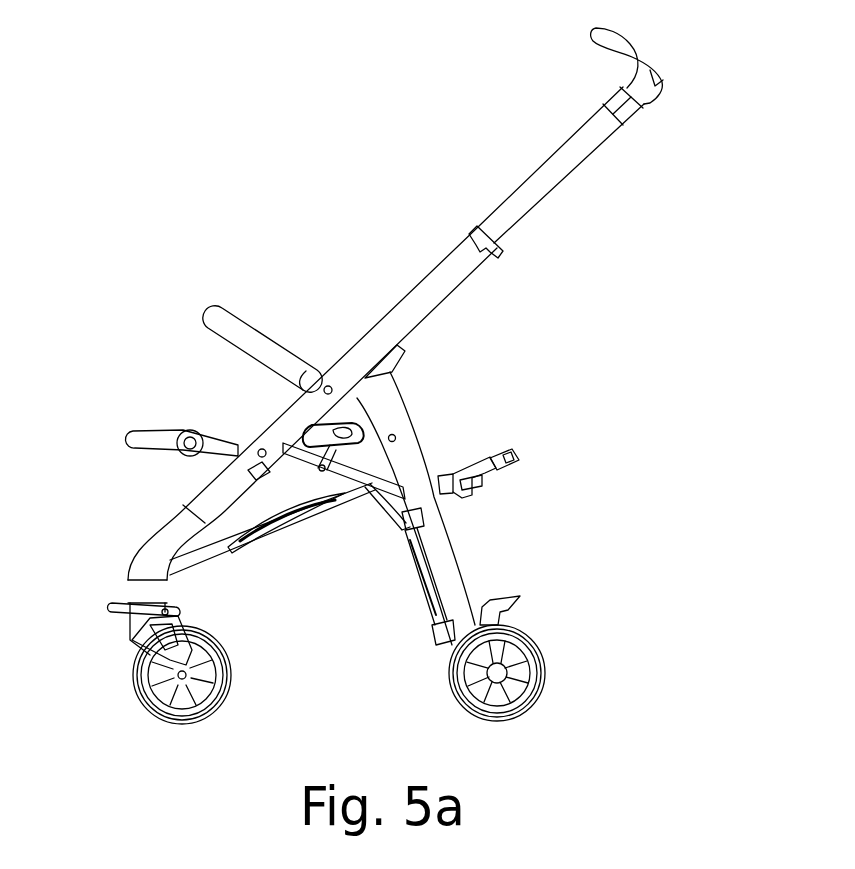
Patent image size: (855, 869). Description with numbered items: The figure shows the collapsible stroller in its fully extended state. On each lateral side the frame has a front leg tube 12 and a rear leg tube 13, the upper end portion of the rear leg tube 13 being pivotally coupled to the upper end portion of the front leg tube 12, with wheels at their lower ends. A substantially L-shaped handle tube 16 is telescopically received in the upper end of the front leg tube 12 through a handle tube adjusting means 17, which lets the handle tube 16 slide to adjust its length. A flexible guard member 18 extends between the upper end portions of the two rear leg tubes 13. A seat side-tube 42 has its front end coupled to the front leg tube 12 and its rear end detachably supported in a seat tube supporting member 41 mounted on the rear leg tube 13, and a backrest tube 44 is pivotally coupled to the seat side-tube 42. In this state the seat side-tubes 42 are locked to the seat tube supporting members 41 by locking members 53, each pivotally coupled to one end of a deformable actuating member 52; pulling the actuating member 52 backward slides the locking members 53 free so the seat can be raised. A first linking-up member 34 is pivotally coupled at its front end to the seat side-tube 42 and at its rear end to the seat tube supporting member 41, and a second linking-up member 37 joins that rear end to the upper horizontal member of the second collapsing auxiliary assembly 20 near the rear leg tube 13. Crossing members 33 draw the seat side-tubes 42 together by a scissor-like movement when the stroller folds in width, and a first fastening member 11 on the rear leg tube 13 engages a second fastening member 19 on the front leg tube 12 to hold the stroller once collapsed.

The first fastening member 11 is at (428, 508).
The front leg tube 12 is at (312, 403).
The rear leg tube 13 is at (513, 635).
The handle tube 16 is at (570, 135).
The handle tube adjusting means 17 is at (453, 225).
The flexible guard member 18 is at (227, 330).
The second fastening member 19 is at (244, 418).
The second collapsing auxiliary assembly 20 is at (402, 618).
The crossing members 33 is at (272, 570).
The first linking-up member 34 is at (344, 524).
The second linking-up member 37 is at (387, 556).
The seat tube supporting member 41 is at (504, 443).
The seat side-tube 42 is at (178, 485).
The backrest tube 44 is at (438, 358).
The actuating member 52 is at (558, 452).
The locking member 53 is at (512, 506).